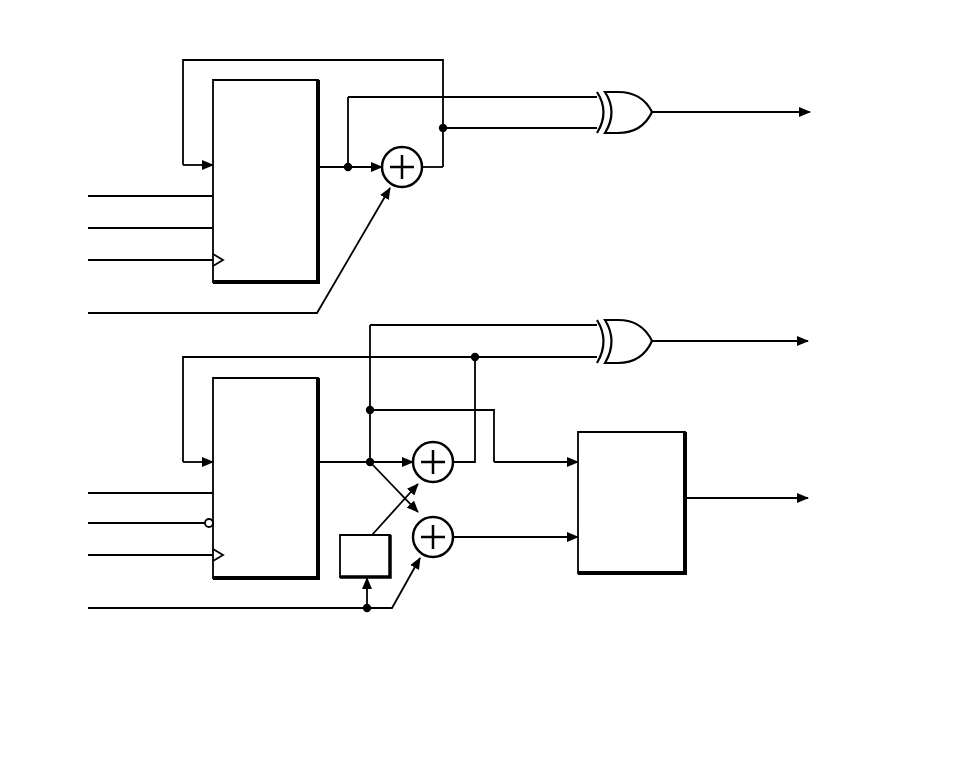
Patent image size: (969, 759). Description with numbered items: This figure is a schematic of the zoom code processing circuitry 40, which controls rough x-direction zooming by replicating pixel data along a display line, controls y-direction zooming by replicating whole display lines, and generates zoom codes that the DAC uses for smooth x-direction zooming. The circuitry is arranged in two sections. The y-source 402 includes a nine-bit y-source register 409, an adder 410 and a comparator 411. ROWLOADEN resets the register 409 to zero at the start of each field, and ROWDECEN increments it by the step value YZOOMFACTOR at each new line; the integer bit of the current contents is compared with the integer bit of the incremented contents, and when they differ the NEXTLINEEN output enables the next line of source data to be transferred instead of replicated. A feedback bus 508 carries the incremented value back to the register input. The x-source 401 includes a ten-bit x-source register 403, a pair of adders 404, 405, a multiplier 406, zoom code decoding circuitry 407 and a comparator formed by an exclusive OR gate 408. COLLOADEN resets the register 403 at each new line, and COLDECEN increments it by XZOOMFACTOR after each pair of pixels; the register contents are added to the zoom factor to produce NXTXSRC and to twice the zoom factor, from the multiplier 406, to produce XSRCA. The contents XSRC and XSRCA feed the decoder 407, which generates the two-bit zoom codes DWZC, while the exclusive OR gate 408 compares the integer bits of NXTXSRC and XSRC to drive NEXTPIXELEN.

The zoom code processing circuitry 40 is at (96, 634).
The y-source 402 is at (46, 44).
The x-source 401 is at (46, 342).
The NXTYSRC feedback bus 508 is at (183, 104).
The y-source register 409 is at (284, 269).
The adder 410 is at (421, 175).
The comparator 411 is at (641, 94).
The comparator (exclusive OR gate) 408 is at (642, 322).
The x-source register 403 is at (284, 566).
The adder 404 is at (452, 471).
The adder 405 is at (452, 546).
The multiplier 406 is at (355, 535).
The zoom code decoding circuitry 407 is at (653, 556).